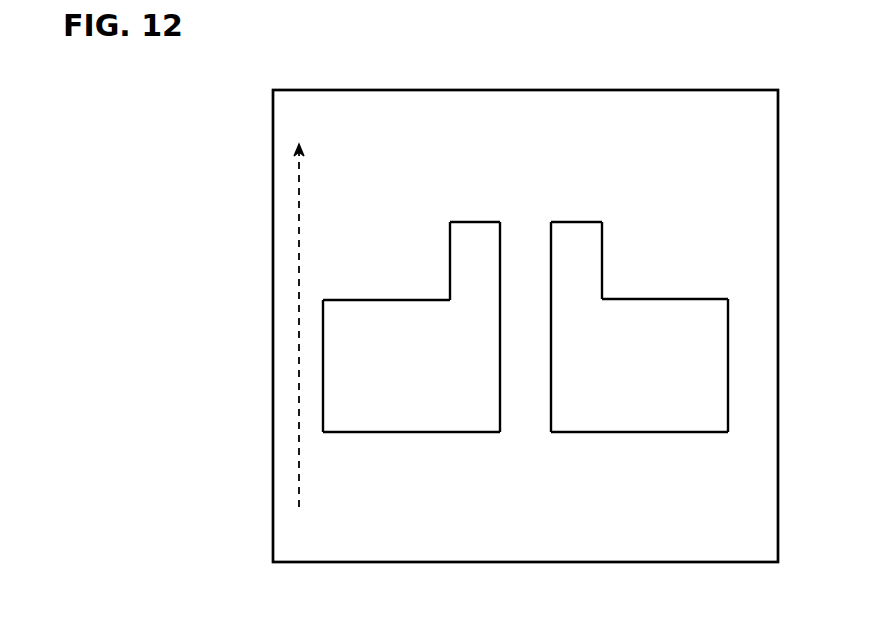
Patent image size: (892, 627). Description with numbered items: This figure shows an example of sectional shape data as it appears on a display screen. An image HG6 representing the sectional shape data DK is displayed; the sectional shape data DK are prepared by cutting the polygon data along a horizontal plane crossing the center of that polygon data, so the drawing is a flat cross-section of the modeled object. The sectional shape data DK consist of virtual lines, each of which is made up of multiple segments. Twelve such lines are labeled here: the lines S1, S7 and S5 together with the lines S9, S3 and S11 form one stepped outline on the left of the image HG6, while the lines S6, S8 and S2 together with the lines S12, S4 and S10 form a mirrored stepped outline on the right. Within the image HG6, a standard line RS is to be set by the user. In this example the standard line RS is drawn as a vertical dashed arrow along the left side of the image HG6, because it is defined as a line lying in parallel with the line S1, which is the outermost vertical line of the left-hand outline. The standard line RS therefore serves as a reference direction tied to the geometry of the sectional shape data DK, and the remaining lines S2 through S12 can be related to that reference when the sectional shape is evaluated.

The image HG6 is at (735, 90).
The sectional shape data DK is at (538, 130).
The standard line RS is at (300, 197).
The line S1 is at (323, 432).
The line S2 is at (728, 432).
The line S3 is at (450, 248).
The line S4 is at (602, 252).
The line S5 is at (500, 432).
The line S6 is at (551, 432).
The line S7 is at (412, 432).
The line S8 is at (638, 432).
The line S9 is at (403, 300).
The line S10 is at (637, 299).
The line S11 is at (470, 222).
The line S12 is at (573, 222).